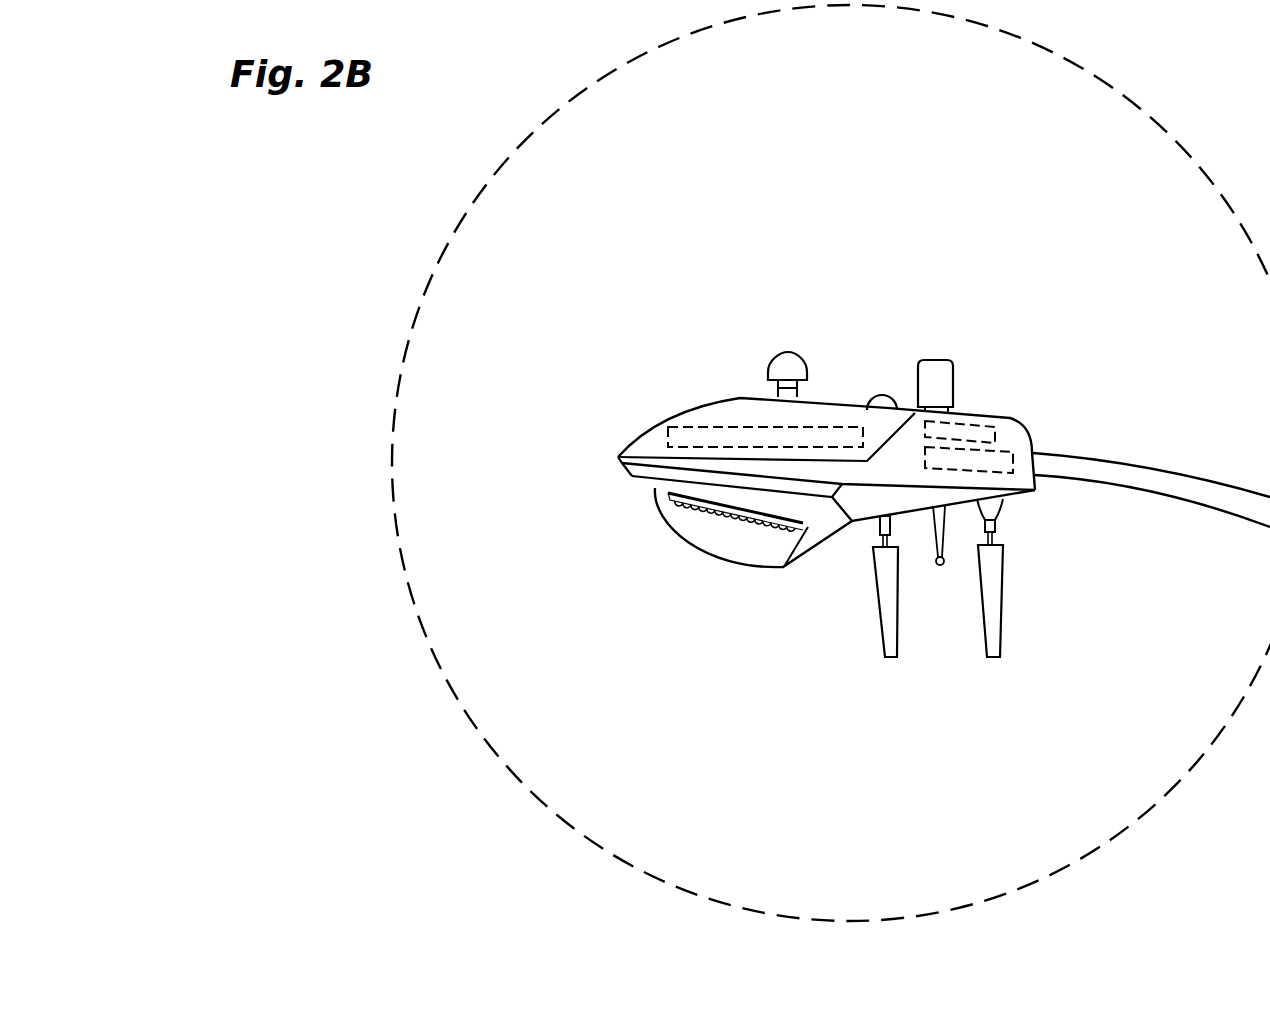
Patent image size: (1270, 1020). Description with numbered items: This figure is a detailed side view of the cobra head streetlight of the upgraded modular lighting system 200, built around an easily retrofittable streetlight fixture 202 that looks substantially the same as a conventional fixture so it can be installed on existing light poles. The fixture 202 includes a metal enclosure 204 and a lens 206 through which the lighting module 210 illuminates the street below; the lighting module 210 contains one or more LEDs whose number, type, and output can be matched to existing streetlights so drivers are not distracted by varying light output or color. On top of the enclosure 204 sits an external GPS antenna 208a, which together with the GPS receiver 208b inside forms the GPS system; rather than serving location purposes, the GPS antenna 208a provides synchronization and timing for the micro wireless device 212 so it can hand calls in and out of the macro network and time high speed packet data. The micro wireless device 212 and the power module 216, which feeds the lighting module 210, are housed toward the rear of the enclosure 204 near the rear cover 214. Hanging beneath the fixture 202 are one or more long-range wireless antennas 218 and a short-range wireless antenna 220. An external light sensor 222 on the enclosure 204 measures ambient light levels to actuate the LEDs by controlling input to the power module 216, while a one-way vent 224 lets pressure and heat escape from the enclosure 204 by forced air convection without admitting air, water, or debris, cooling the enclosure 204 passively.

The modular lighting system 200 is at (366, 186).
The streetlight fixture 202 is at (631, 400).
The enclosure 204 is at (917, 348).
The lens 206 is at (707, 555).
The external GPS antenna 208a is at (787, 352).
The GPS receiver 208b is at (752, 427).
The lighting module 210 is at (677, 502).
The micro wireless device 212 is at (1002, 452).
The rear cover 214 is at (1010, 503).
The power module 216 is at (970, 425).
The long-range wireless antennas 218 is at (891, 658).
The short-range wireless antennas 220 is at (942, 565).
The external light sensor 222 is at (937, 358).
The one-way vent 224 is at (883, 397).